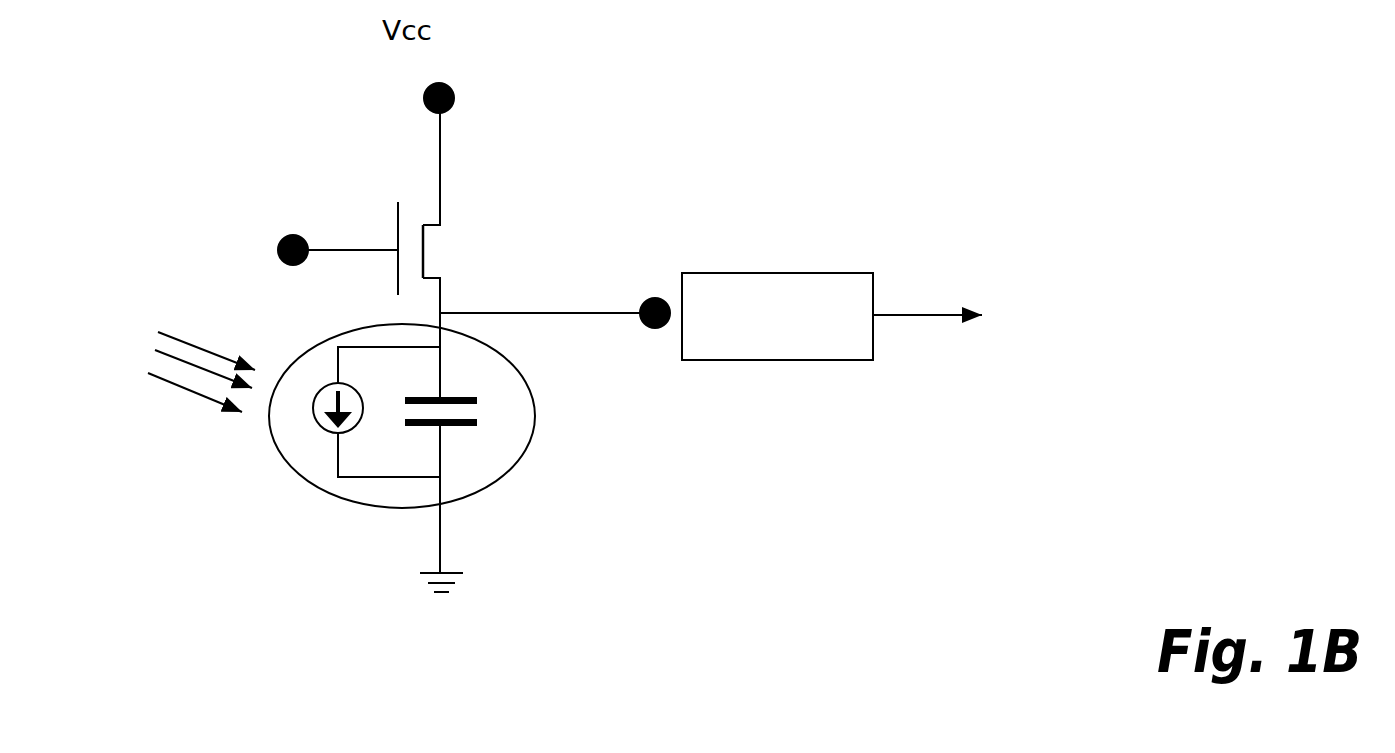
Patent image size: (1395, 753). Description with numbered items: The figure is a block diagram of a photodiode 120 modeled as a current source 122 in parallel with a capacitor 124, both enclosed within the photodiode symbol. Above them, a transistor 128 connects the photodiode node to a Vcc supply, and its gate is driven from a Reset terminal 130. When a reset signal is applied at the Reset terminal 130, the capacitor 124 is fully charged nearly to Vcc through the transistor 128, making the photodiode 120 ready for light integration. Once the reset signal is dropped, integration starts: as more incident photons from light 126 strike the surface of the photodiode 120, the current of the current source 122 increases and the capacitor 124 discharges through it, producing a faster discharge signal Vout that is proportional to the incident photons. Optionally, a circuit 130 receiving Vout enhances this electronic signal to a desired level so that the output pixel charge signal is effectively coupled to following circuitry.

The photodiode 120 is at (505, 458).
The current source 122 is at (320, 438).
The capacitor 124 is at (483, 410).
The light 126 is at (168, 372).
The transistor 128 is at (461, 299).
The Reset terminal / circuit 130 is at (268, 257).